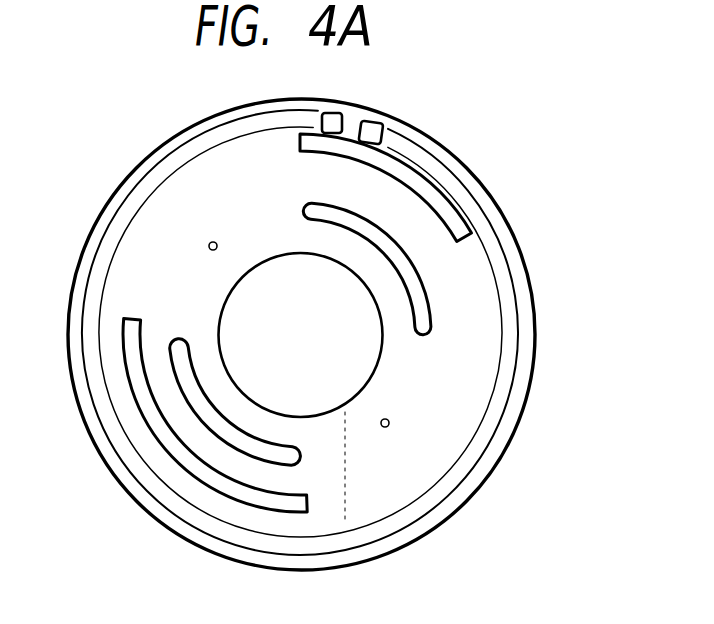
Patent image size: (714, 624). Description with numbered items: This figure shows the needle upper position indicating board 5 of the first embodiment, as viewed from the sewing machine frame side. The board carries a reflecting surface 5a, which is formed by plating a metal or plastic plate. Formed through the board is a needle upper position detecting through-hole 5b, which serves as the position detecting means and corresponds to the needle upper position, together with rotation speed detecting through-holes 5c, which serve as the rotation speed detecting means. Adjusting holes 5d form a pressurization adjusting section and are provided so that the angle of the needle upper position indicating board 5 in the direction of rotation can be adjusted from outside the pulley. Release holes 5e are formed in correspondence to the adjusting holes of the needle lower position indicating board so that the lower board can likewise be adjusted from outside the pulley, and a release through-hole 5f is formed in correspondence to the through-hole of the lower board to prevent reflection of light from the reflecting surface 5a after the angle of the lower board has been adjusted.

The needle upper position indicating board 5 is at (462, 303).
The reflecting surface 5a is at (477, 256).
The needle upper position detecting through-hole 5b is at (413, 183).
The rotation speed detecting through-holes 5c is at (371, 130).
The adjusting holes 5d is at (389, 425).
The release holes 5e is at (302, 207).
The release through-hole 5f is at (136, 372).